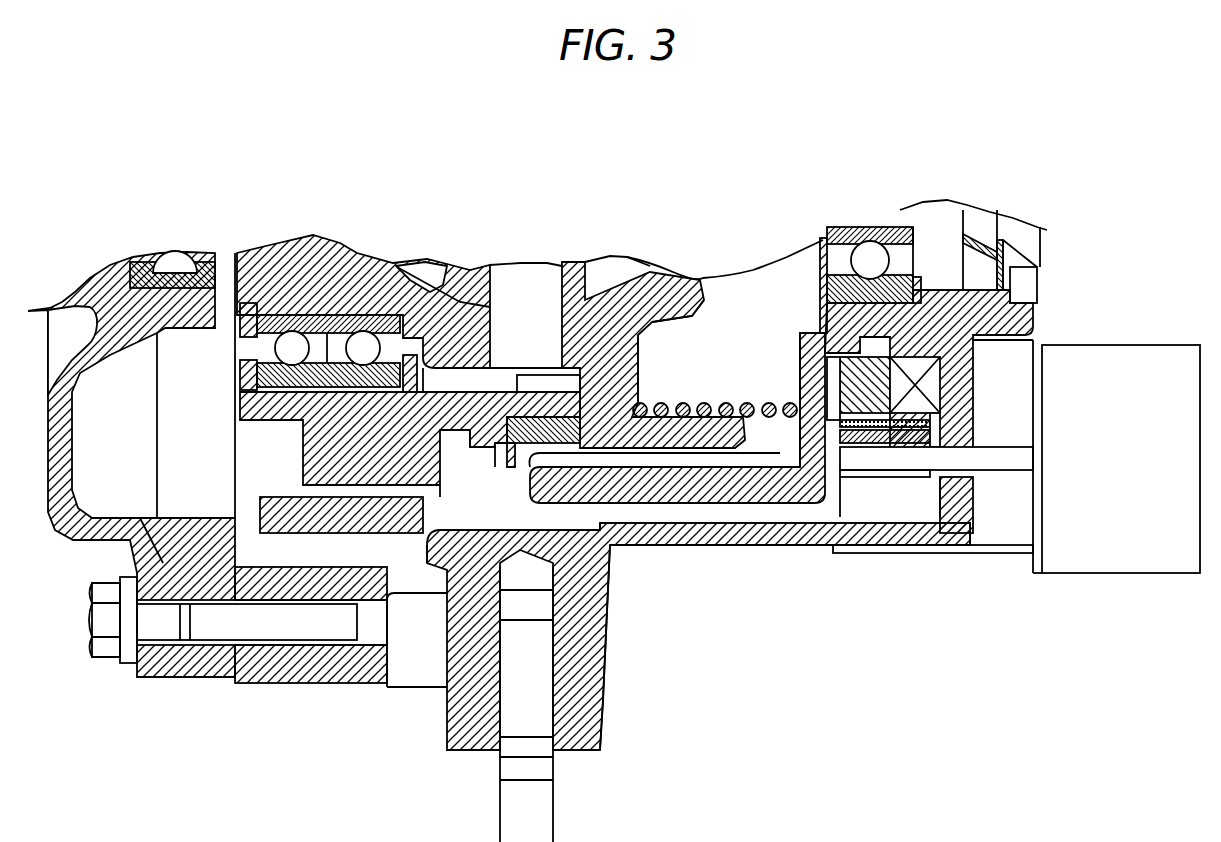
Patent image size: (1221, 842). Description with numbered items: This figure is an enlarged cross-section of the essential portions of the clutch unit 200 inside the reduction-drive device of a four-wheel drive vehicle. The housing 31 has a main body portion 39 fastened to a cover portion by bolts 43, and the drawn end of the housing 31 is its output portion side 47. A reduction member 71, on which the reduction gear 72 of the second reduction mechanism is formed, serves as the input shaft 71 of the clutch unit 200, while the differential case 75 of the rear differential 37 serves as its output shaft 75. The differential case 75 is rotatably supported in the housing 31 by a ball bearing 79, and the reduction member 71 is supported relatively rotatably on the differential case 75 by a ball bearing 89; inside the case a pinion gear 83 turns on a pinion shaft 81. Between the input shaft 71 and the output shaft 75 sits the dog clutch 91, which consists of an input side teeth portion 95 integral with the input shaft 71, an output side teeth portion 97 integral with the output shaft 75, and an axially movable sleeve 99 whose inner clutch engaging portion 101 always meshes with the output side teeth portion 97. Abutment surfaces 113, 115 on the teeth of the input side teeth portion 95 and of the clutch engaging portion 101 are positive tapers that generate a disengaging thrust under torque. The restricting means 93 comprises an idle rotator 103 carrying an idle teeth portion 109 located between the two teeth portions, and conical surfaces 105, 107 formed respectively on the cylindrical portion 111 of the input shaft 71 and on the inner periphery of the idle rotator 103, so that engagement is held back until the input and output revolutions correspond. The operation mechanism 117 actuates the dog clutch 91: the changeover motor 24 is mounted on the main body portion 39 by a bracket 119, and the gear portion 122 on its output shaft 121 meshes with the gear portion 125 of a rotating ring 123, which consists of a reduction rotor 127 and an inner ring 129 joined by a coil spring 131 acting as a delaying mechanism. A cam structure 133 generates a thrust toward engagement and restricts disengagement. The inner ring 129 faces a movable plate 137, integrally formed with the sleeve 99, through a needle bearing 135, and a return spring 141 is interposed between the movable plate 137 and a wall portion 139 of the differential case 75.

The changeover motor 24 is at (1100, 558).
The housing 31 is at (243, 691).
The rear differential 37 is at (725, 203).
The main body portion 39 is at (810, 547).
The bolts 43 is at (92, 623).
The output portion side 47 is at (148, 686).
The reduction member 71 is at (290, 515).
The reduction gear 72 is at (325, 553).
The differential case 75 is at (686, 315).
The ball bearing 79 is at (915, 228).
The pinion shaft 81 is at (537, 280).
The pinion gear 83 is at (580, 275).
The ball bearing 89 is at (305, 313).
The dog clutch 91 is at (476, 485).
The restricting means 93 is at (509, 485).
The input side teeth portion 95 is at (330, 495).
The output side teeth portion 97 is at (677, 501).
The sleeve 99 is at (757, 465).
The clutch engaging portion 101 is at (650, 470).
The idle rotator 103 is at (607, 575).
The conical surface 105 is at (605, 600).
The conical surface 107 is at (620, 547).
The idle teeth portion 109 is at (500, 610).
The cylindrical portion 111 is at (517, 390).
The abutment surface 113 is at (468, 458).
The abutment surface 115 is at (777, 546).
The operation mechanism 117 is at (921, 497).
The bracket 119 is at (997, 554).
The output shaft 121 is at (1013, 474).
The gear portion 122 is at (870, 478).
The rotating ring 123 is at (968, 312).
The gear portion 125 is at (893, 478).
The reduction rotor 127 is at (945, 439).
The inner ring 129 is at (942, 385).
The coil spring 131 is at (932, 424).
The cam structure 133 is at (975, 338).
The needle bearing 135 is at (812, 345).
The movable plate 137 is at (795, 367).
The wall portion 139 is at (634, 381).
The return spring 141 is at (727, 402).
The clutch unit 200 is at (760, 722).